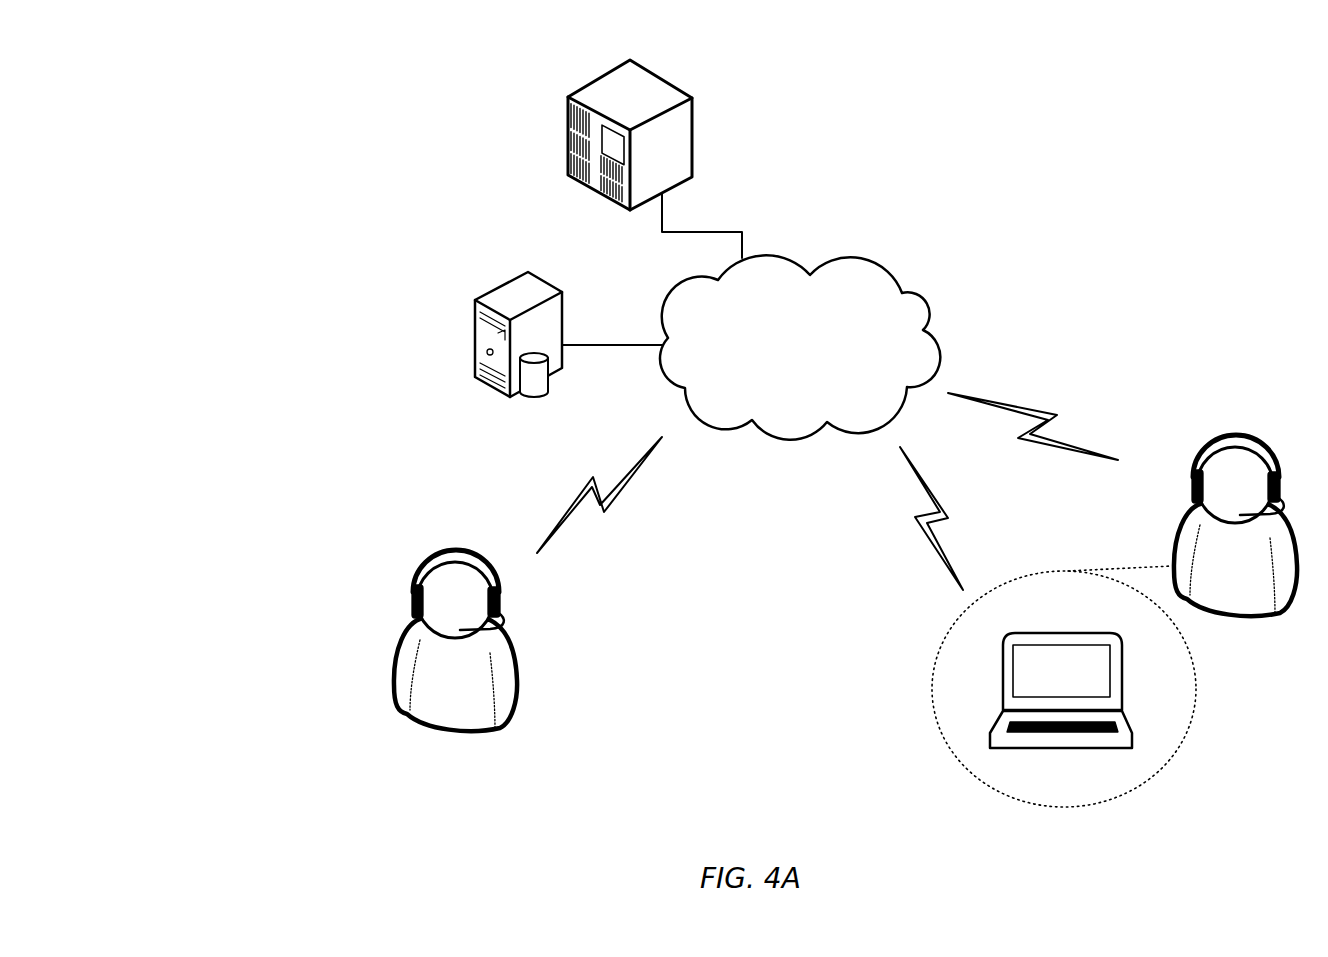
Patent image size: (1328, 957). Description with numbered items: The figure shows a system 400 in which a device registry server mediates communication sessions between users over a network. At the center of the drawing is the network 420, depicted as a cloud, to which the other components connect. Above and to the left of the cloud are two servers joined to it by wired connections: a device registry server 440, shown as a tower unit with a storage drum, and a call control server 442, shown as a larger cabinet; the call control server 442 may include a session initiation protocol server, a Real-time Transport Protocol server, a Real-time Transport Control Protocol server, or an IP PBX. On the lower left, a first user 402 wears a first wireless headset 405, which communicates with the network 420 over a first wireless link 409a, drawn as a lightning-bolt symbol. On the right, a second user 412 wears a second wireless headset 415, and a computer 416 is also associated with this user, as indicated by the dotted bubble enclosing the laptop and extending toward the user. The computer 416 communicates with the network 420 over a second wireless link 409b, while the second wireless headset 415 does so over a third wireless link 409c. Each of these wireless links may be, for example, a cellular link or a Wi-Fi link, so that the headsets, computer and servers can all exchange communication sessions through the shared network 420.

The system 400 is at (271, 123).
The first user 402 is at (464, 683).
The first wireless headset 405 is at (430, 574).
The first wireless link 409a is at (565, 514).
The second wireless link 409b is at (914, 517).
The third wireless link 409c is at (1058, 415).
The second user 412 is at (1235, 531).
The second wireless headset 415 is at (1225, 474).
The computer 416 is at (1120, 640).
The network 420 is at (778, 357).
The device registry server 440 is at (502, 285).
The call control server 442 is at (692, 110).